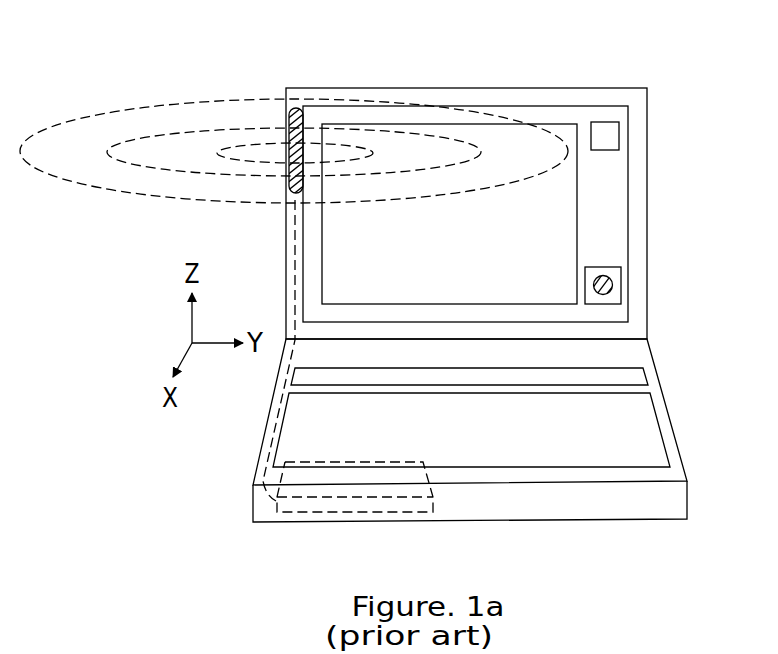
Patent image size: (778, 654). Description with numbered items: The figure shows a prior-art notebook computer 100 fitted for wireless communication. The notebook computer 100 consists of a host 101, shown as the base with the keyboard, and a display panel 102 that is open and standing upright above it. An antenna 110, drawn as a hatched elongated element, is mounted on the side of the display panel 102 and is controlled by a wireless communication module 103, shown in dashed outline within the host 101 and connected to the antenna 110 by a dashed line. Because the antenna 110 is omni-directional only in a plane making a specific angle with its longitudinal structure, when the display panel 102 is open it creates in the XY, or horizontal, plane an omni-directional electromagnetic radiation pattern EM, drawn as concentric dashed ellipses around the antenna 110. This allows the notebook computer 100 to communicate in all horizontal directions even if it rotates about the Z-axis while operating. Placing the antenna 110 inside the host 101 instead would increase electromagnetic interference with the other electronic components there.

The notebook computer 100 is at (620, 73).
The host 101 is at (663, 413).
The display panel 102 is at (647, 192).
The wireless communication module 103 is at (395, 517).
The antenna 110 is at (289, 118).
The electromagnetic wave radiation pattern EM is at (133, 110).